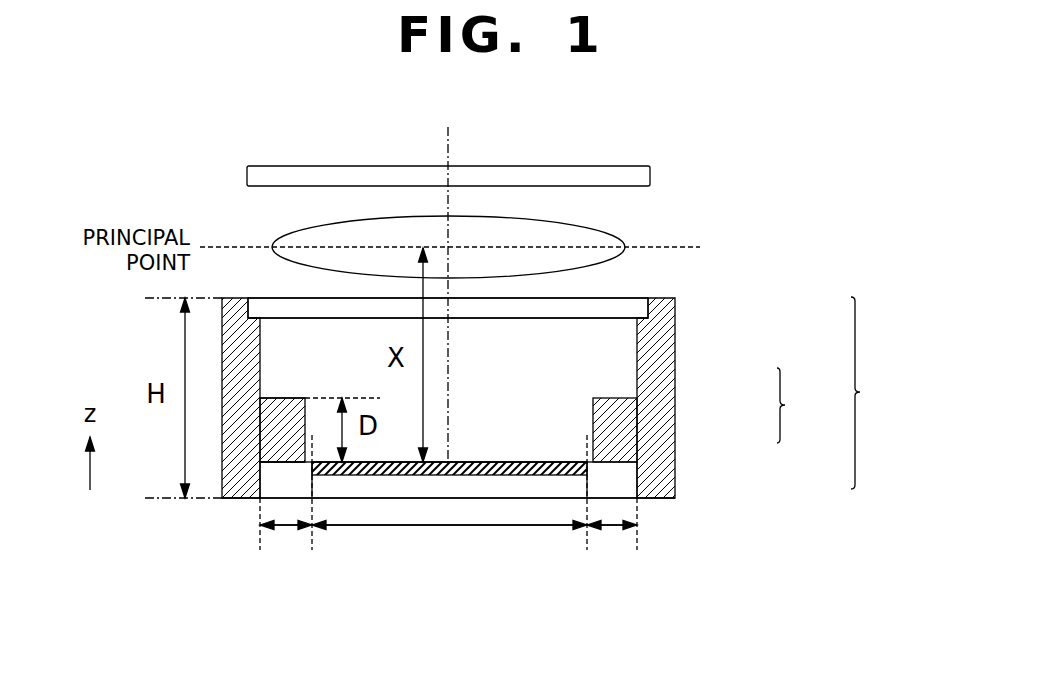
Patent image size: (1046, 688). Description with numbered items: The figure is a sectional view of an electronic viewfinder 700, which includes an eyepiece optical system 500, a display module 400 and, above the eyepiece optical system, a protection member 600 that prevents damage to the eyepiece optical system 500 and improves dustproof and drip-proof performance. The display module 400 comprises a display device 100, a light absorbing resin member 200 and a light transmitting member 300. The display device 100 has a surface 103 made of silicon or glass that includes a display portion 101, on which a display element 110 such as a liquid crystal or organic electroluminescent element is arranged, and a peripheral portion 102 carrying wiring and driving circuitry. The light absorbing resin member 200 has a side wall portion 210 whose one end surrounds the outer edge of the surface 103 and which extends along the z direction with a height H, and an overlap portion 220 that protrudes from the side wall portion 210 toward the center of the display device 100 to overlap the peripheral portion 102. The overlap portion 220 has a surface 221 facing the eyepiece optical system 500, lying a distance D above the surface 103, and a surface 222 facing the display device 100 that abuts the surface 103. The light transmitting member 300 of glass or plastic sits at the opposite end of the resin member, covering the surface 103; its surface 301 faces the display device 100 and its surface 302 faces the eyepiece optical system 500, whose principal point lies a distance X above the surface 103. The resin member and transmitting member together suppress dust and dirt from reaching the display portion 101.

The display device 100 is at (625, 480).
The display portion 101 is at (445, 528).
The peripheral portion 102 is at (280, 528).
The surface 103 is at (496, 450).
The display element 110 is at (550, 462).
The light absorbing resin member 200 is at (812, 405).
The side wall portion 210 is at (665, 390).
The overlap portion 220 is at (625, 433).
The surface 221 is at (292, 386).
The surface 222 is at (281, 475).
The light transmitting member 300 is at (637, 305).
The surface 301 is at (592, 330).
The surface 302 is at (613, 291).
The display module 400 is at (887, 393).
The eyepiece optical system 500 is at (595, 235).
The protection member 600 is at (637, 178).
The electronic viewfinder 700 is at (299, 147).